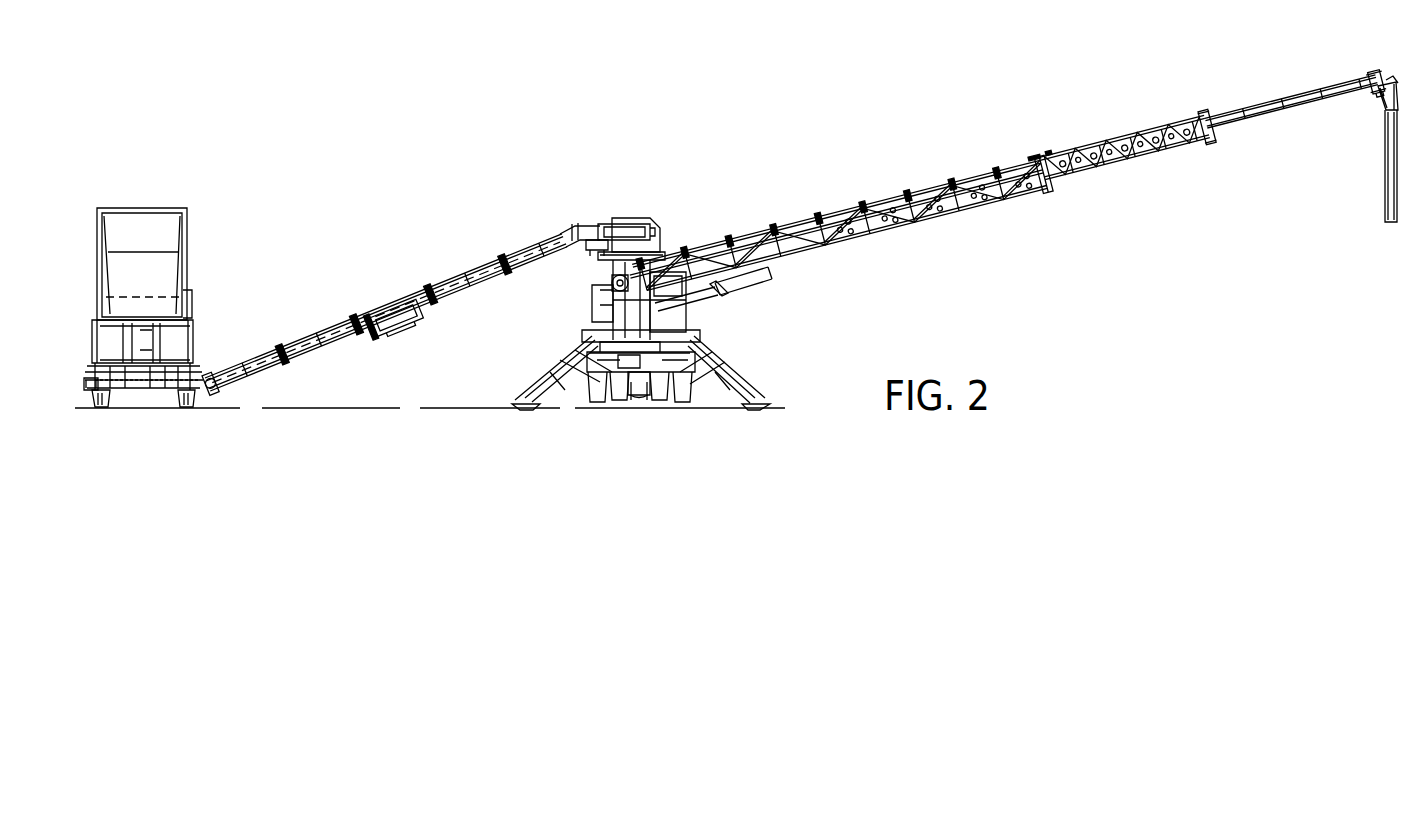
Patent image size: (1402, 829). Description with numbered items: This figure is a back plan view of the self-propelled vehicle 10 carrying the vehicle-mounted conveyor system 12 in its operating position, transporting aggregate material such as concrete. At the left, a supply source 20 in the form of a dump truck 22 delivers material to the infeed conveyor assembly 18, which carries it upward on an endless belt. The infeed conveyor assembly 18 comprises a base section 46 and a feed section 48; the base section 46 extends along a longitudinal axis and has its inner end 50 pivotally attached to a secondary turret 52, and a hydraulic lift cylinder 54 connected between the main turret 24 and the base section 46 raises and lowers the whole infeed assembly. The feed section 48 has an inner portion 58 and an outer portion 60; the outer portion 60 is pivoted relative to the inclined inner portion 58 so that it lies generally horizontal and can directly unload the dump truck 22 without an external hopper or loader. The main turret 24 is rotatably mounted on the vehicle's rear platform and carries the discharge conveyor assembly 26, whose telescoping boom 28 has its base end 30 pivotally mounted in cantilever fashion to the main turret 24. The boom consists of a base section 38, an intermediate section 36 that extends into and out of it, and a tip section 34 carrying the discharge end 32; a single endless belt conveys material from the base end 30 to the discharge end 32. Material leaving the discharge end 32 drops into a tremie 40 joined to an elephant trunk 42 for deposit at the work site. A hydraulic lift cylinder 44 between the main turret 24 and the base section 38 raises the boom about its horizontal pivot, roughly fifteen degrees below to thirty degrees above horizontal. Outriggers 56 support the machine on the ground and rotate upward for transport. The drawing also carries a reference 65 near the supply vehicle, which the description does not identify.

The self-propelled vehicle 10 is at (586, 118).
The vehicle-mounted conveyor system 12 is at (657, 208).
The infeed conveyor assembly 18 is at (386, 290).
The supply source 20 is at (147, 200).
The dump truck 22 is at (170, 274).
The main turret 24 is at (620, 296).
The discharge conveyor assembly 26 is at (857, 194).
The telescoping boom 28 is at (1034, 157).
The base end 30 is at (650, 272).
The discharge end 32 is at (1377, 83).
The tip section 34 is at (1291, 101).
The intermediate section 36 is at (1127, 147).
The base section 38 is at (839, 226).
The tremie 40 is at (1380, 100).
The elephant trunk 42 is at (1385, 193).
The hydraulic lift cylinder 44 is at (700, 290).
The base section 46 is at (495, 399).
The feed section 48 is at (386, 312).
The inner end 50 is at (562, 240).
The secondary turret 52 is at (630, 224).
The hydraulic lift cylinder 54 is at (592, 250).
The outriggers 56 is at (735, 385).
The inner portion 58 is at (210, 383).
The outer portion 60 is at (160, 393).
The hitch 65 is at (92, 386).